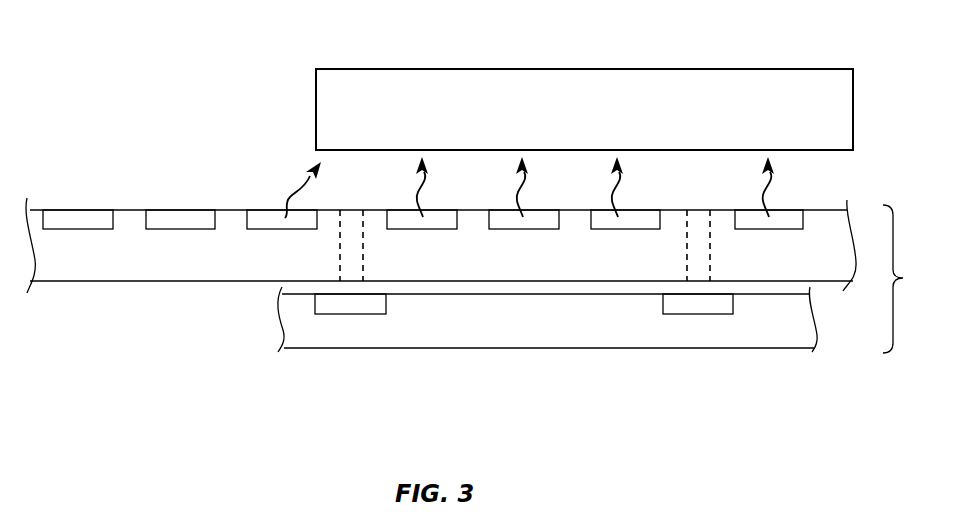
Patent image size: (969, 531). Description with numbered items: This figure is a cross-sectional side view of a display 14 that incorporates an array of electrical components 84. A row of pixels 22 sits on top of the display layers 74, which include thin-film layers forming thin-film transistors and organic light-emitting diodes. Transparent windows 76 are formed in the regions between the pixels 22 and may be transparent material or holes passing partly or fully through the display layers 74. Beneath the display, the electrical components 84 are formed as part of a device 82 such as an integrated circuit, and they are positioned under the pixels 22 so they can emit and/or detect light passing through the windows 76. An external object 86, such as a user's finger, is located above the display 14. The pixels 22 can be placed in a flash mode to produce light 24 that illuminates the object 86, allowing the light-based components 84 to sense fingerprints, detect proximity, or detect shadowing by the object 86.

The display 14 is at (906, 279).
The pixels 22 is at (400, 215).
The light 24 is at (295, 194).
The display layers 74 is at (118, 283).
The transparent windows 76 is at (365, 245).
The device 82 is at (475, 349).
The electrical components 84 is at (386, 304).
The object 86 is at (725, 69).